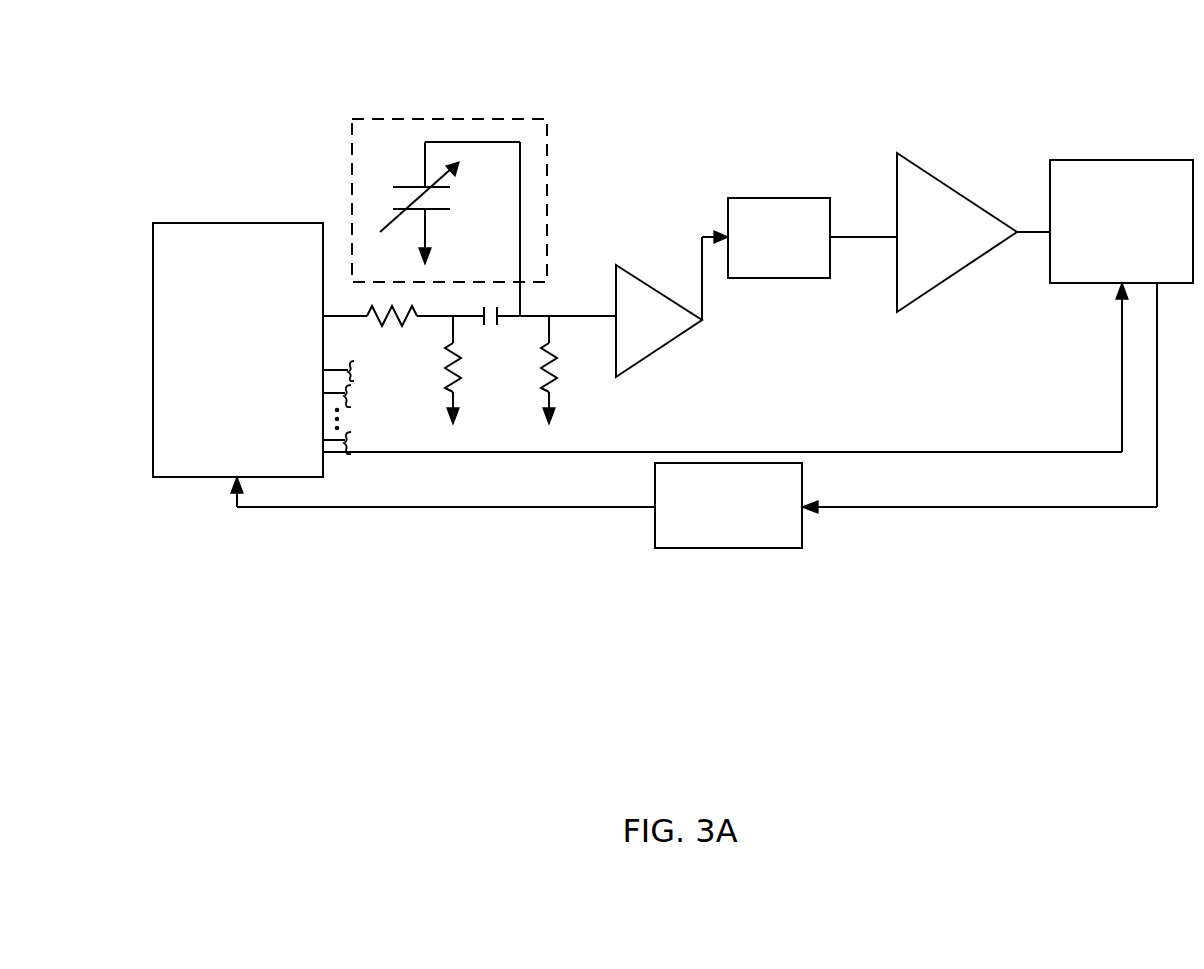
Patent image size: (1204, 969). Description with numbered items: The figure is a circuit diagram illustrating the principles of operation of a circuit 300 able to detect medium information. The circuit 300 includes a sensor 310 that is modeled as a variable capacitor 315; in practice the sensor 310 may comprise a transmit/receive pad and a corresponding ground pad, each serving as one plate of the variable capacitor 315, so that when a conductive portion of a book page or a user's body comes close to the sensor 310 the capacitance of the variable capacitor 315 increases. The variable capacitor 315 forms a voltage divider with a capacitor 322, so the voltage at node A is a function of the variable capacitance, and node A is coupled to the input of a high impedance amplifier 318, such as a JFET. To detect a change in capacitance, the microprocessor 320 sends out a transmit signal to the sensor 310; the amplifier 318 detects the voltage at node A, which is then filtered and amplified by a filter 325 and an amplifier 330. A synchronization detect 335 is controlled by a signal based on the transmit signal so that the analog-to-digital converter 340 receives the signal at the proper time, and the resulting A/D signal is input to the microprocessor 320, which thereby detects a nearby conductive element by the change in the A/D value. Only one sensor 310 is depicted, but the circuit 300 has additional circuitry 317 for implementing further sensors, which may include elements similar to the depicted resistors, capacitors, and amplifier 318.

The circuit 300 is at (810, 93).
The sensor 310 is at (468, 187).
The variable capacitor 315 is at (443, 213).
The additional circuitry 317 is at (365, 392).
The amplifier 318 is at (637, 353).
The microprocessor 320 is at (227, 379).
The capacitor 322 is at (502, 373).
The filter 325 is at (760, 268).
The amplifier 330 is at (942, 193).
The synchronization detect 335 is at (1130, 167).
The analog-to-digital converter 340 is at (745, 538).